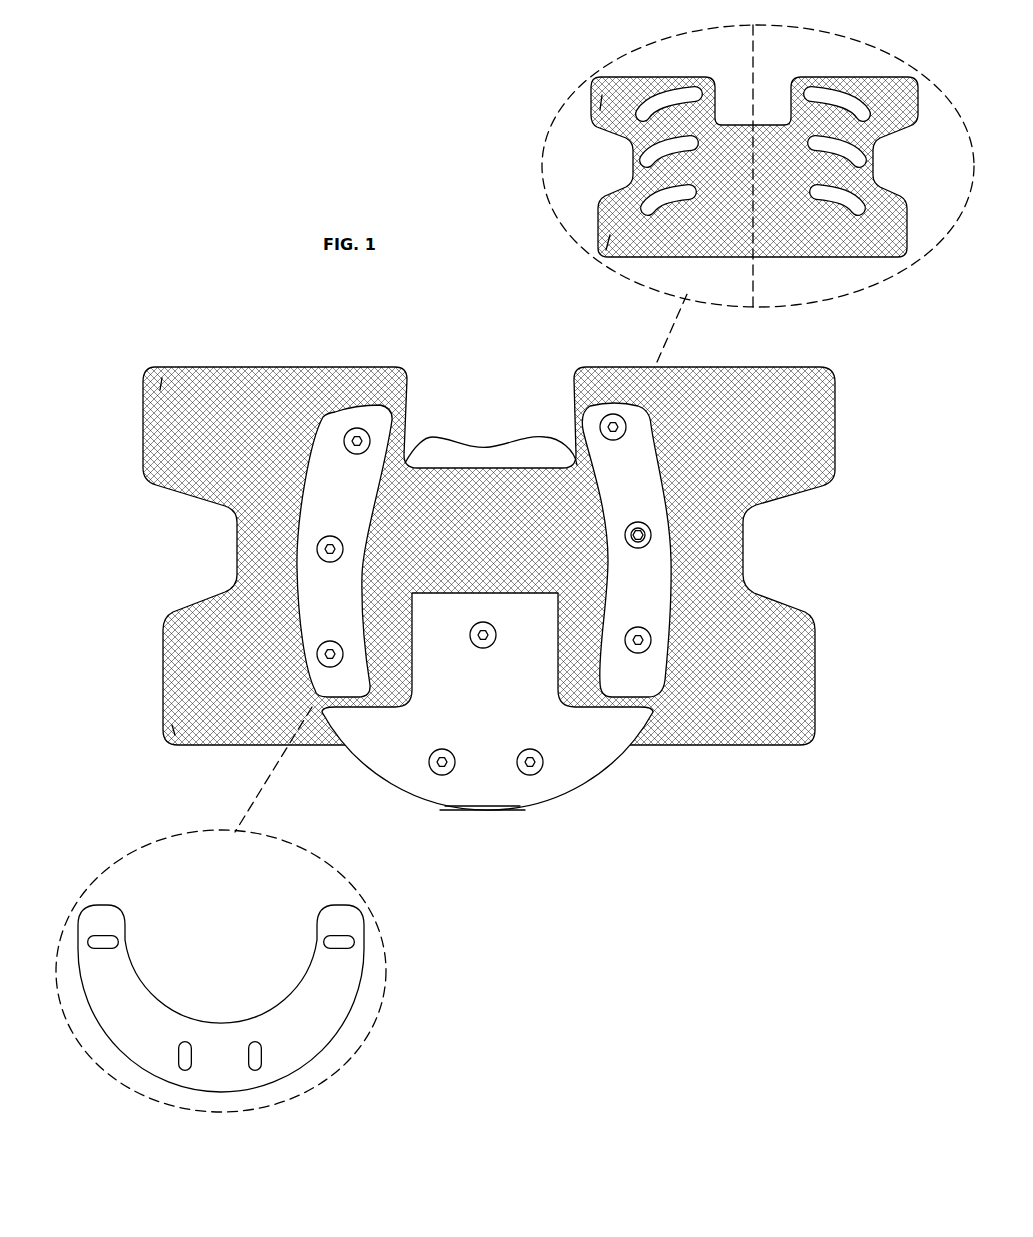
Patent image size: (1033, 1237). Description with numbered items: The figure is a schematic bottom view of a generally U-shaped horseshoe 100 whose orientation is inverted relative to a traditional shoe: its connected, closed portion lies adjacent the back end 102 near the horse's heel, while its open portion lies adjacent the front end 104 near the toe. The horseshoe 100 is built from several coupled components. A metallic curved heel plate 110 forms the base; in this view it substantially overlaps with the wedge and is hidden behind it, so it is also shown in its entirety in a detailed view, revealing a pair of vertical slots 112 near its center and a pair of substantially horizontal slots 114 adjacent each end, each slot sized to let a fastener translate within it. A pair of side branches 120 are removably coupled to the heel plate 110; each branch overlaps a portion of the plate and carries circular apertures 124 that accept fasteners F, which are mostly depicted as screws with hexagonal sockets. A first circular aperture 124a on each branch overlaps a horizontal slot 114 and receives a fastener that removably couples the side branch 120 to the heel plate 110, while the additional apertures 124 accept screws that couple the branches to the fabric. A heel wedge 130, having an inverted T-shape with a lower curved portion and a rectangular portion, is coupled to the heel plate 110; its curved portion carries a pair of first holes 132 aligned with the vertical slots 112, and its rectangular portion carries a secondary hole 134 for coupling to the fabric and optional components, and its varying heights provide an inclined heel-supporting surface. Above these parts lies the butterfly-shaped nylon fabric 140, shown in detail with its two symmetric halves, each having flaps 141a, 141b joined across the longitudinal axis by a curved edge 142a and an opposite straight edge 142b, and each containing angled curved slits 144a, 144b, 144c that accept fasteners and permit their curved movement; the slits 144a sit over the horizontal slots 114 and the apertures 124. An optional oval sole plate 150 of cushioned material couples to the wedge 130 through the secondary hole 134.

The horseshoe 100 is at (515, 571).
The back end 102 is at (354, 867).
The front end 104 is at (535, 382).
The heel plate 110 is at (480, 812).
The vertical slots 112 is at (255, 1070).
The horizontal slots 114 is at (345, 945).
The side branches 120 is at (302, 573).
The circular apertures 124 is at (600, 422).
The first circular aperture 124a is at (652, 638).
The heel wedge 130 is at (375, 757).
The first holes 132 is at (528, 775).
The secondary hole 134 is at (490, 648).
The fabric 140 is at (283, 378).
The flap 141a is at (600, 110).
The flap 141b is at (610, 235).
The curved edge 142a is at (160, 390).
The straight edge 142b is at (172, 725).
The curved slit 144a is at (652, 207).
The curved slit 144b is at (648, 160).
The curved slit 144c is at (640, 116).
The sole plate 150 is at (525, 452).
The fasteners F is at (641, 530).